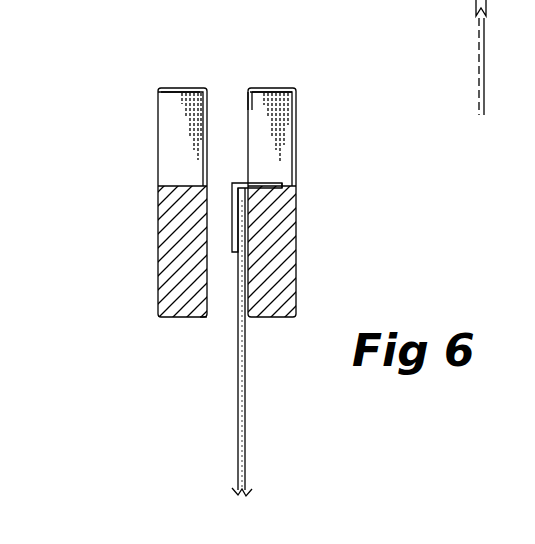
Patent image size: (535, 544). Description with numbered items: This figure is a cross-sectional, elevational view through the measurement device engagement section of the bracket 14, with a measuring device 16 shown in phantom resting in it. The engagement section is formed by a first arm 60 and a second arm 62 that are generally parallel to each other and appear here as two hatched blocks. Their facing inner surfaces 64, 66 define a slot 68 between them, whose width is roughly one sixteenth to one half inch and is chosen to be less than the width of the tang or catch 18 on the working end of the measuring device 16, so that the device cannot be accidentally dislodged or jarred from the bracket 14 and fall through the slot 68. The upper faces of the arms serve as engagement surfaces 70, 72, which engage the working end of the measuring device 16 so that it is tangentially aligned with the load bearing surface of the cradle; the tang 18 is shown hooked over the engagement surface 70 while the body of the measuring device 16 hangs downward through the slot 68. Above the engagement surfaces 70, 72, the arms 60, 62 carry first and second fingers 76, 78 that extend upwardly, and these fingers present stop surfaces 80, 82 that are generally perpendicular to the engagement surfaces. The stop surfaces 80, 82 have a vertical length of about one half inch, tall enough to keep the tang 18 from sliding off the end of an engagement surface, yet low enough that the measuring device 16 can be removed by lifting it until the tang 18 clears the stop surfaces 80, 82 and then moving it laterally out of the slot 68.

The bracket 14 is at (128, 88).
The measuring device 16 is at (238, 445).
The tang or catch 18 is at (273, 182).
The first arm 60 is at (296, 270).
The second arm 62 is at (159, 272).
The inner surface 64 is at (207, 302).
The inner surface 66 is at (248, 97).
The slot 68 is at (225, 106).
The engagement surface 70 is at (289, 187).
The engagement surface 72 is at (176, 186).
The first finger 76 is at (266, 89).
The second finger 78 is at (165, 86).
The stop surface 80 is at (284, 133).
The stop surface 82 is at (170, 137).